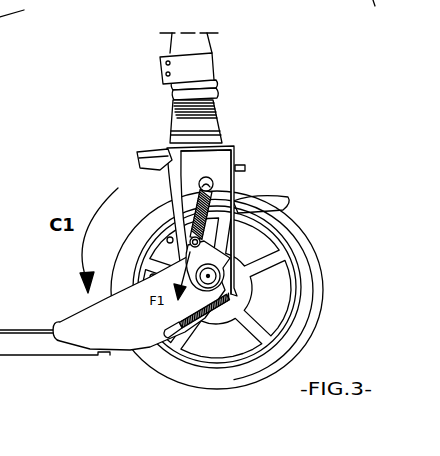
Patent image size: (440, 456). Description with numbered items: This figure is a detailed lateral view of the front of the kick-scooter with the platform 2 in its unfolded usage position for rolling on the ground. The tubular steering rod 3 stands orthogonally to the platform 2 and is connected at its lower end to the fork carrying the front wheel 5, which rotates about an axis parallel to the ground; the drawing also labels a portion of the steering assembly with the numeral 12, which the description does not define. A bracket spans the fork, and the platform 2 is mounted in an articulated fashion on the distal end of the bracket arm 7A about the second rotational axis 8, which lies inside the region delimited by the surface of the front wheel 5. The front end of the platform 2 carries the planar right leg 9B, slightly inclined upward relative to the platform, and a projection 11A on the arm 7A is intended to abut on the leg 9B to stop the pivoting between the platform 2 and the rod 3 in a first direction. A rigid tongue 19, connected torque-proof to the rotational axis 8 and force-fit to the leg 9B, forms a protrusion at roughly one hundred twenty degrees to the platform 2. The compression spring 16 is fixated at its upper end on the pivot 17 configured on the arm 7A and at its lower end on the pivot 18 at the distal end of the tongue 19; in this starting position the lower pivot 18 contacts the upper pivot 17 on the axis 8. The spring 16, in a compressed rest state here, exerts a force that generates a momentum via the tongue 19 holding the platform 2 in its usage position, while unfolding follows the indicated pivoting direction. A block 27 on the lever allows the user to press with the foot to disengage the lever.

The platform 2 is at (28, 325).
The tubular steering rod 3 is at (152, 38).
The front wheel 5 is at (312, 250).
The arm of the bracket 7A is at (203, 163).
The second rotational axis 8 is at (218, 283).
The right leg 9B is at (140, 313).
The projection 11A is at (210, 322).
The steering column 12 is at (211, 118).
The compression spring 16 is at (217, 209).
The pivot 17 is at (221, 172).
The pivot 18 is at (206, 240).
The rigid tongue 19 is at (202, 257).
The block 27 is at (153, 163).